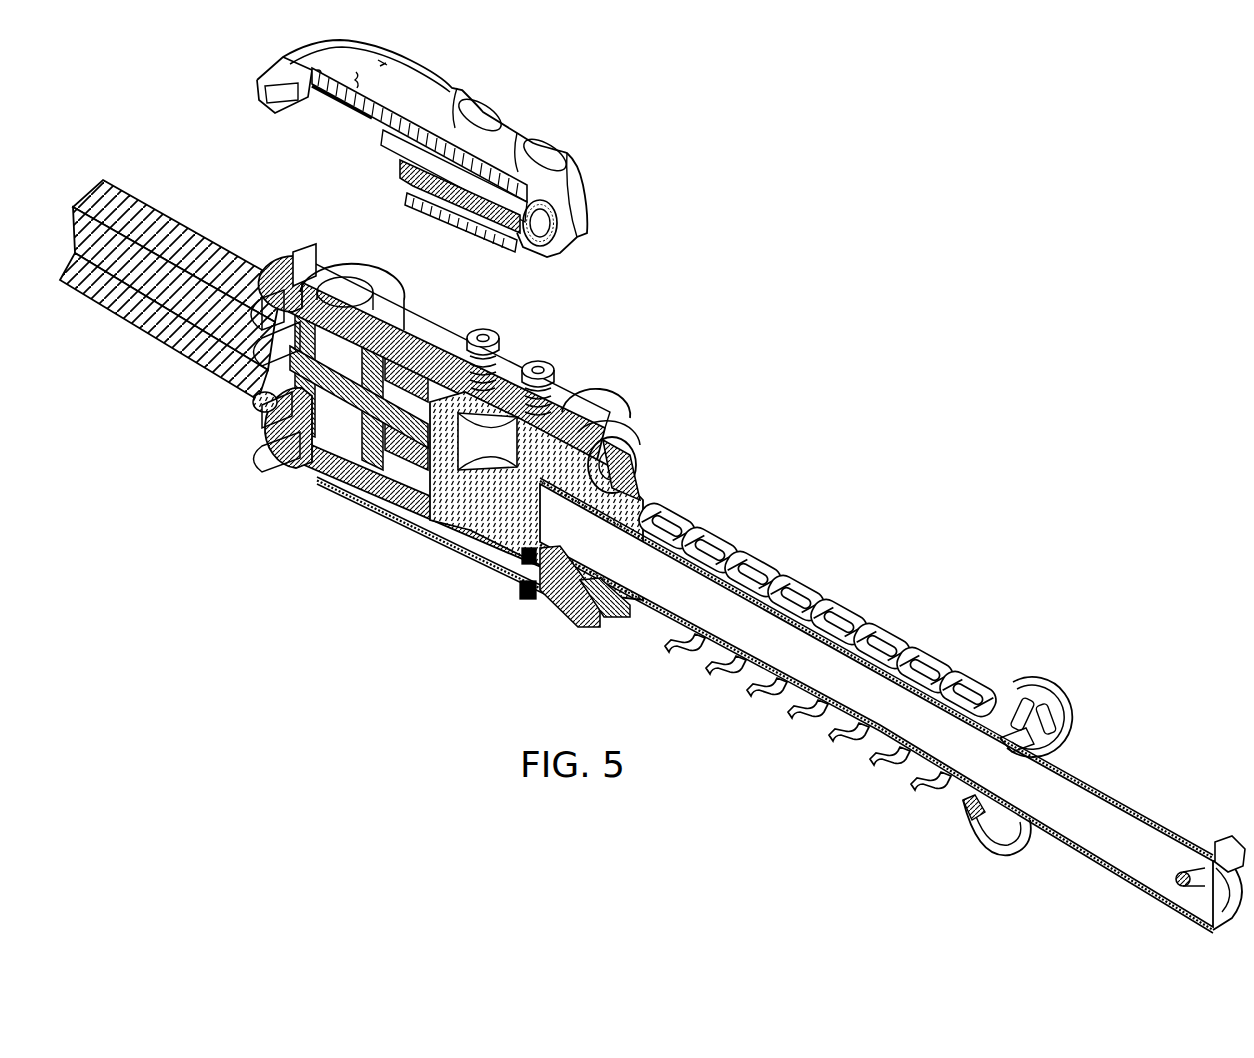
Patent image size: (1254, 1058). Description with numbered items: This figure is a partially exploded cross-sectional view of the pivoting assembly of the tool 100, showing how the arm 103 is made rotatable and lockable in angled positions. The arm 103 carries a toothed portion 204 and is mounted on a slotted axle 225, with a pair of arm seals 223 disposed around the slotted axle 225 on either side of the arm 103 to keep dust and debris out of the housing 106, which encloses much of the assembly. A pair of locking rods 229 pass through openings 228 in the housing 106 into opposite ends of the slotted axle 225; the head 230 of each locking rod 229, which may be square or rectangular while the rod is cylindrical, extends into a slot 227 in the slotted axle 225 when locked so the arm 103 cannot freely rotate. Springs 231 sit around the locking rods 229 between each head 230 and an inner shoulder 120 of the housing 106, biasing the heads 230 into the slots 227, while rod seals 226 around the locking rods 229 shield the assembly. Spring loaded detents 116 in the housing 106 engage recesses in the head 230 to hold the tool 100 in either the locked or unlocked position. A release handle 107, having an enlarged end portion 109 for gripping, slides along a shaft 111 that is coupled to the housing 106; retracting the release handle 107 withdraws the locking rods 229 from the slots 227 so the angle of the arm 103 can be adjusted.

The tool 100 is at (866, 375).
The arm 103 is at (170, 240).
The housing 106 is at (458, 97).
The release handle 107 is at (880, 615).
The enlarged end portion 109 is at (1020, 678).
The shaft 111 is at (793, 688).
The spring loaded detents 116 is at (410, 143).
The inner shoulder 120 is at (522, 222).
The toothed portion 204 is at (437, 333).
The arm seals 223 is at (278, 303).
The slotted axle 225 is at (381, 293).
The rod seals 226 is at (562, 394).
The slot 227 is at (268, 345).
The openings 228 is at (623, 477).
The locking rods 229 is at (430, 540).
The head 230 is at (305, 280).
The springs 231 is at (512, 372).